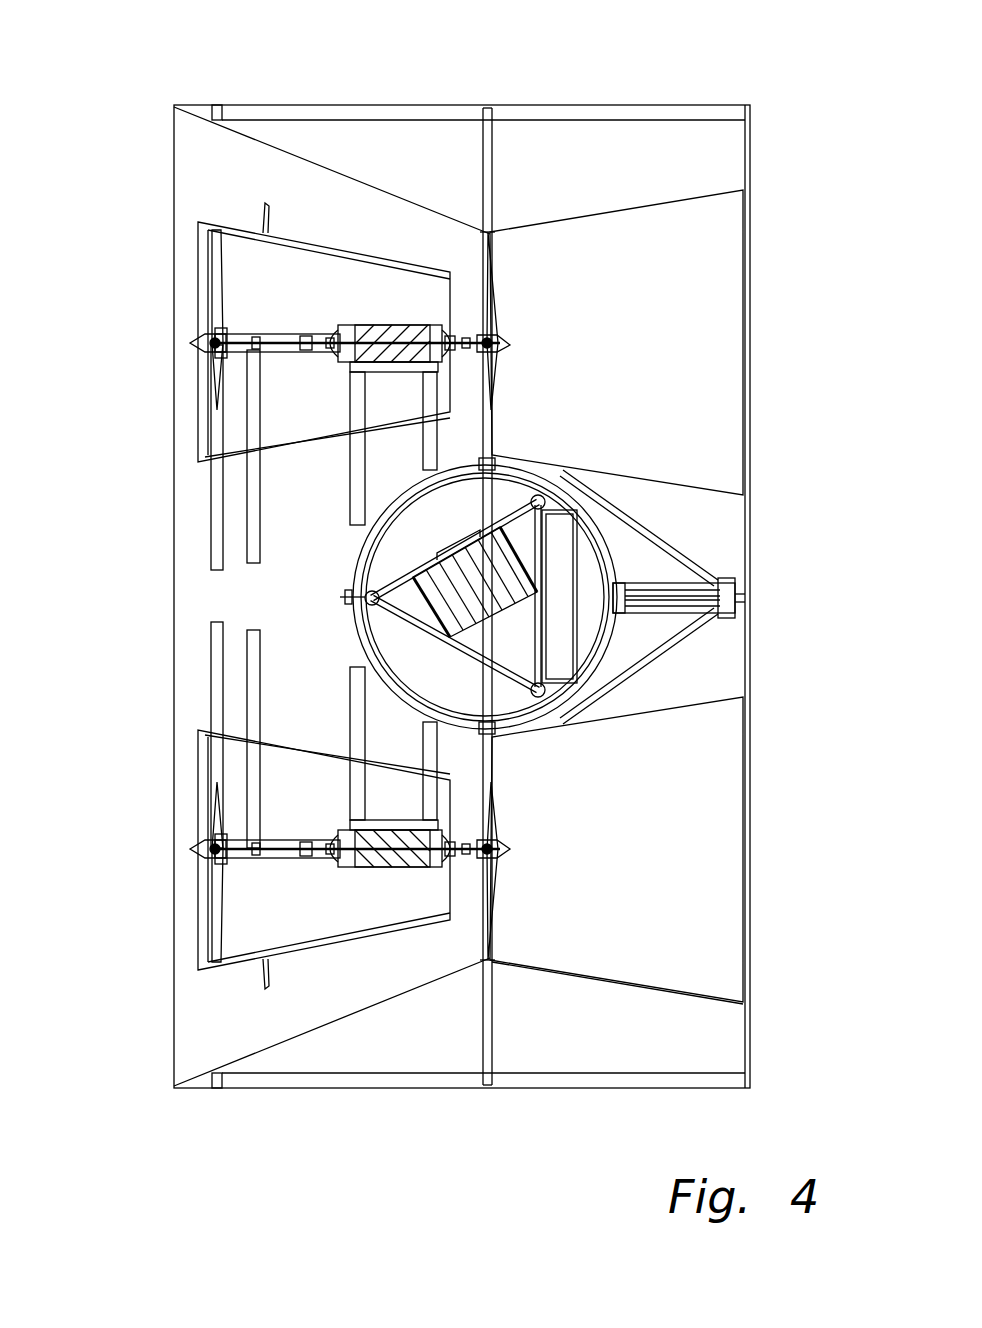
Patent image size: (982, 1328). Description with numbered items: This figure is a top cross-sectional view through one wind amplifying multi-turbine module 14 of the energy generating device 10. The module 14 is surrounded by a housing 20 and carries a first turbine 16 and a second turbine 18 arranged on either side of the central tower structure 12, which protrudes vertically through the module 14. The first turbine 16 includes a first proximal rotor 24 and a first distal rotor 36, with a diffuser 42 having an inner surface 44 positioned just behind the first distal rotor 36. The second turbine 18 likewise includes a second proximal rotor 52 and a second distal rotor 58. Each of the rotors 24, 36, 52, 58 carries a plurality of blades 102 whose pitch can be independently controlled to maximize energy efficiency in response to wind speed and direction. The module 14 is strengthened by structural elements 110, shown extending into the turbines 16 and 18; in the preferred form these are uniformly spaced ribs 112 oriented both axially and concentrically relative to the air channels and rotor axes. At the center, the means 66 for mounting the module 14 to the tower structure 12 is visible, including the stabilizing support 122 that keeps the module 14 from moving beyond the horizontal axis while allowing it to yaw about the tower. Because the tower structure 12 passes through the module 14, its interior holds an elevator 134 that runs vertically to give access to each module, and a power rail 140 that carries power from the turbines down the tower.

The energy generating device 10 is at (200, 1132).
The tower structure 12 is at (645, 690).
The wind amplifying multi-turbine module 14 is at (215, 103).
The first turbine 16 is at (265, 230).
The second turbine 18 is at (265, 962).
The housing 20 is at (330, 104).
The first proximal rotor 24 is at (208, 352).
The first distal rotor 36 is at (503, 350).
The diffuser 42 is at (653, 987).
The inner surface 44 is at (723, 995).
The second proximal rotor 52 is at (208, 858).
The second distal rotor 58 is at (503, 858).
The means for mounting the module 66 is at (572, 625).
The blades 102 is at (212, 282).
The structural elements 110 is at (213, 495).
The ribs 112 is at (357, 515).
The stabilizing support 122 is at (615, 545).
The elevator 134 is at (525, 620).
The power rail 140 is at (740, 596).